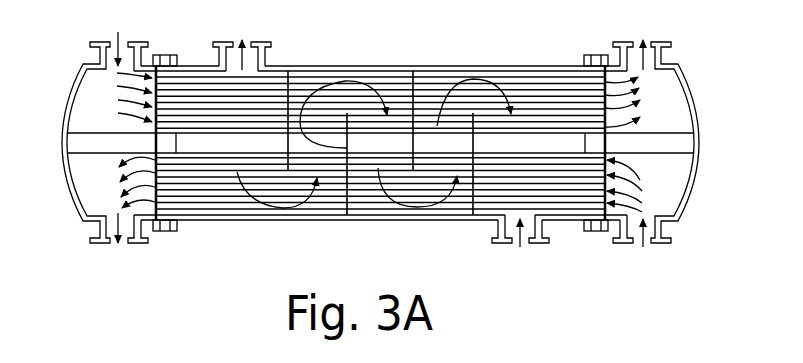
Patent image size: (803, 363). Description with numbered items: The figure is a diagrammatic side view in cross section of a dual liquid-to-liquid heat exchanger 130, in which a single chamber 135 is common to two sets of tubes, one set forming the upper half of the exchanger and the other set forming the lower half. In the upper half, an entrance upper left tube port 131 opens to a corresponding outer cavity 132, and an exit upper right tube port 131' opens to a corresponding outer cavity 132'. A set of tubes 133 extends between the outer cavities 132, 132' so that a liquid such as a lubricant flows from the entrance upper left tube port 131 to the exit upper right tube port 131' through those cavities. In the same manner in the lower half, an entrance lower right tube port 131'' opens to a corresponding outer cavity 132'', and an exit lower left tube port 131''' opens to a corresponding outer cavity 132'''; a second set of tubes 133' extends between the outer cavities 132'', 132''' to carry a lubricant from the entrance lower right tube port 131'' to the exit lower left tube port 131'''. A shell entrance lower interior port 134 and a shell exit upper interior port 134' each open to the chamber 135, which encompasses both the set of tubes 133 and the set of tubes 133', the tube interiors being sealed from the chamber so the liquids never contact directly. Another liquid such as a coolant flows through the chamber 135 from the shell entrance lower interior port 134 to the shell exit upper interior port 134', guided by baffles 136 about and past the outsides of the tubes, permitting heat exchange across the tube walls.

The dual liquid-to-liquid heat exchanger 130 is at (502, 62).
The entrance upper left tube port 131 is at (88, 44).
The exit upper right tube port 131' is at (677, 43).
The entrance lower right tube port 131'' is at (680, 231).
The exit lower left tube port 131''' is at (80, 228).
The outer cavity 132 is at (88, 142).
The outer cavity 132' is at (679, 142).
The outer cavity 132'' is at (683, 176).
The outer cavity 132''' is at (82, 182).
The set of tubes 133 is at (395, 98).
The set of tubes 133' is at (410, 188).
The shell entrance lower interior port 134 is at (506, 248).
The shell exit upper interior port 134' is at (277, 40).
The chamber 135 is at (293, 80).
The baffles 136 is at (410, 89).